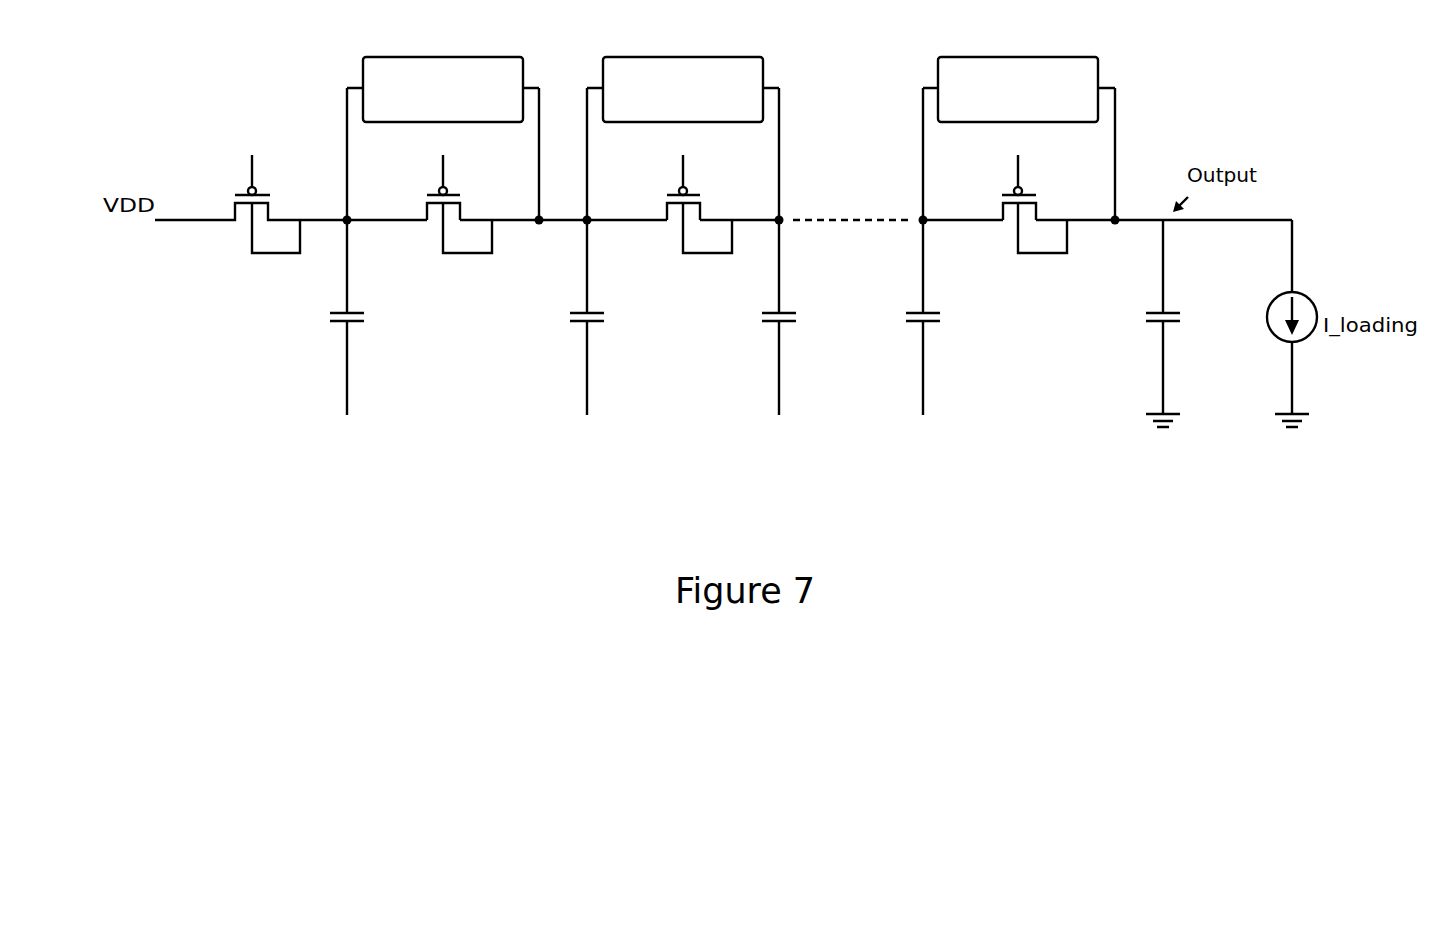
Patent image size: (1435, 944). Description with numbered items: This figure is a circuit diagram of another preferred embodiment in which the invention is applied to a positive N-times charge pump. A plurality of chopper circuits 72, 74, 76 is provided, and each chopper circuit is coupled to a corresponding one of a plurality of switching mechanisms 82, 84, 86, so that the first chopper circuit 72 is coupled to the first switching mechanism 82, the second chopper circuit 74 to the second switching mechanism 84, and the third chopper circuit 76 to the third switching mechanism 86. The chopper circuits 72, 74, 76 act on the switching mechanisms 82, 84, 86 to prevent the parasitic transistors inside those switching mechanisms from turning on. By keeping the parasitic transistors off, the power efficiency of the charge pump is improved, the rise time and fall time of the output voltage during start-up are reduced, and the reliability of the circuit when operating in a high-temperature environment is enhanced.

The chopper circuit 72 is at (423, 57).
The chopper circuit 74 is at (673, 57).
The chopper circuit 76 is at (1015, 57).
The switching mechanism 82 is at (475, 255).
The switching mechanism 84 is at (688, 255).
The switching mechanism 86 is at (1050, 255).